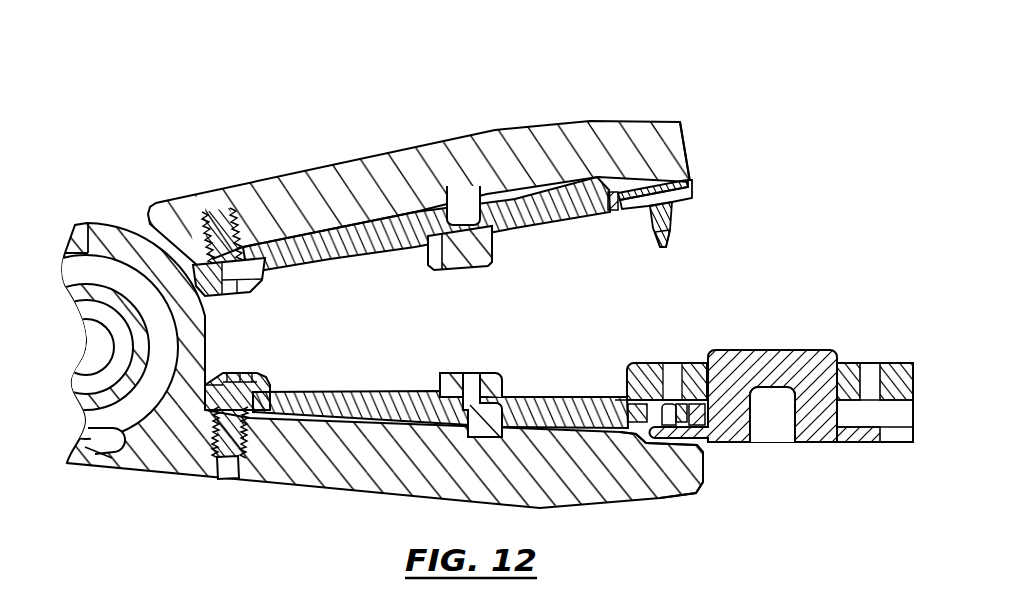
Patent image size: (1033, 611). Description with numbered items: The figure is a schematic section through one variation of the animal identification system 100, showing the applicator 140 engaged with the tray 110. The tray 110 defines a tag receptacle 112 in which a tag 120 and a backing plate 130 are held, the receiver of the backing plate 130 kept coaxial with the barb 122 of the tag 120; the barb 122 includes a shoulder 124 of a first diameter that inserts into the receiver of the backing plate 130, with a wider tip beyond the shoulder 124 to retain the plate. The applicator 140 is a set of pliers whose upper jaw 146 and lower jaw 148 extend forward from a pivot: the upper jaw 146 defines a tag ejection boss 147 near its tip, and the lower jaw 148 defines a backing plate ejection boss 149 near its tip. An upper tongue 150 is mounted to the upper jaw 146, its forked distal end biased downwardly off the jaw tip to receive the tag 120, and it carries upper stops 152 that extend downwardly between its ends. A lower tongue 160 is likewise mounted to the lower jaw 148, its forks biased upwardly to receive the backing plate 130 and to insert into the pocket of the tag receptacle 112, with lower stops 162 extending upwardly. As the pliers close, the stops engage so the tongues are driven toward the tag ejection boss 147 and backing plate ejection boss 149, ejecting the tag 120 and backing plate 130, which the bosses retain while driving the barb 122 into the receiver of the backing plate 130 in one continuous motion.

The animal identification system 100 is at (106, 188).
The tray 110 is at (820, 360).
The tag receptacle 112 is at (670, 370).
The tag 120 is at (688, 182).
The barb 122 is at (668, 238).
The shoulder 124 is at (672, 220).
The backing plate 130 is at (673, 415).
The applicator 140 is at (187, 450).
The upper jaw 146 is at (503, 147).
The tag ejection boss 147 is at (655, 172).
The lower jaw 148 is at (677, 477).
The backing plate ejection boss 149 is at (637, 438).
The upper tongue 150 is at (563, 200).
The upper stops 152 is at (458, 248).
The lower tongue 160 is at (573, 408).
The lower stops 162 is at (471, 388).